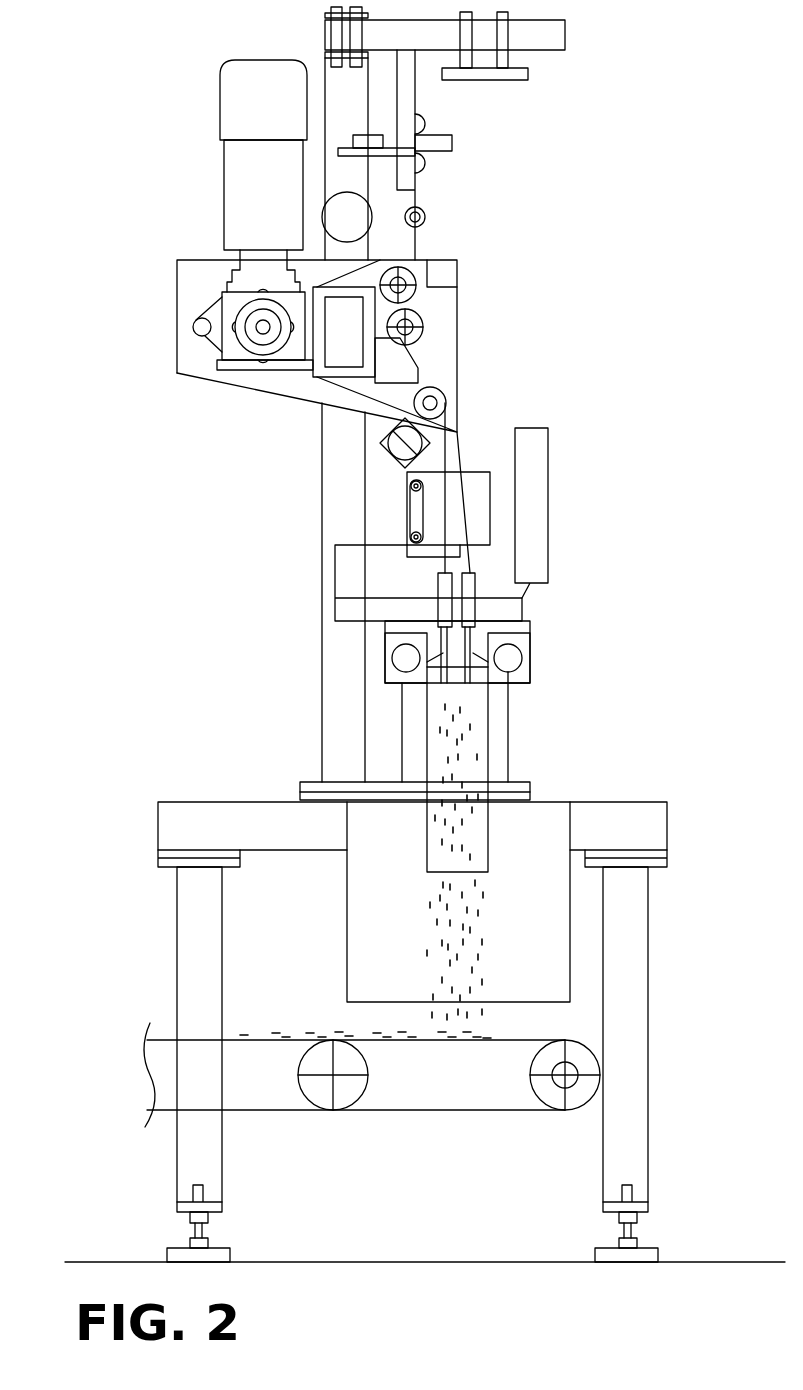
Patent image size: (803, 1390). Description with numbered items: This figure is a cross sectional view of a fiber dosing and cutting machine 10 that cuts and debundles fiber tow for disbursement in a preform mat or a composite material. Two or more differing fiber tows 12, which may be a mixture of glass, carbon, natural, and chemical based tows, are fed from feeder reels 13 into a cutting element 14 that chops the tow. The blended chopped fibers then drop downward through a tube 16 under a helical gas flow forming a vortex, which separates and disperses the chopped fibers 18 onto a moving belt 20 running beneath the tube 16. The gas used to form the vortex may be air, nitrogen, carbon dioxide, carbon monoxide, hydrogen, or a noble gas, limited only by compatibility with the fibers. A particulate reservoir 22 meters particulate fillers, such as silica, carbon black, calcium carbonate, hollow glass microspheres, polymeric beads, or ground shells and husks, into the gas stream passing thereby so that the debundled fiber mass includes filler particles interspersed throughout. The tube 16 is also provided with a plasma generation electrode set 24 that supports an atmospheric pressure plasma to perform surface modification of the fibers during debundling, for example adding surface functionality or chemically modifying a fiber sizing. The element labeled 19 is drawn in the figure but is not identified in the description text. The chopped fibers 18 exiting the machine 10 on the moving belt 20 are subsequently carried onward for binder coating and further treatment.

The fiber dosing and cutting machine 10 is at (78, 108).
The fiber tows 12 is at (463, 477).
The feeder reels 13 is at (210, 342).
The cutting element 14 is at (457, 658).
The tube 16 is at (488, 765).
The chopped fibers 18 is at (477, 925).
The enclosure chamber 19 is at (347, 922).
The moving belt 20 is at (538, 1038).
The particulate reservoir 22 is at (550, 500).
The plasma generation electrode set 24 is at (530, 657).